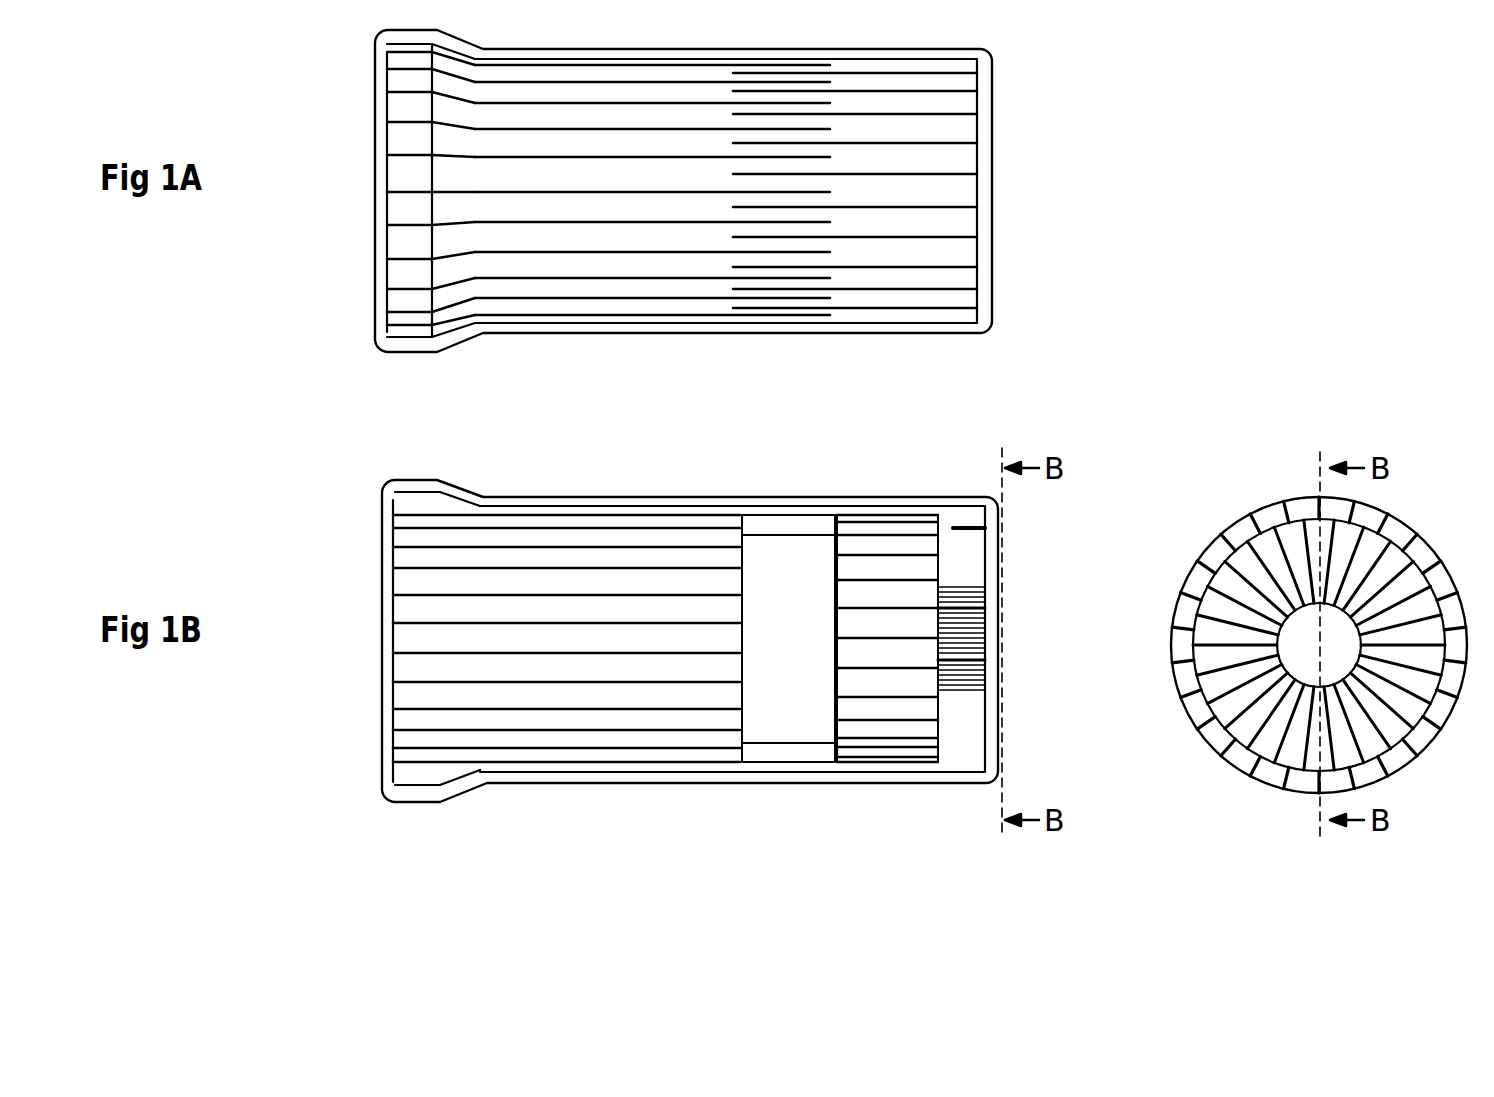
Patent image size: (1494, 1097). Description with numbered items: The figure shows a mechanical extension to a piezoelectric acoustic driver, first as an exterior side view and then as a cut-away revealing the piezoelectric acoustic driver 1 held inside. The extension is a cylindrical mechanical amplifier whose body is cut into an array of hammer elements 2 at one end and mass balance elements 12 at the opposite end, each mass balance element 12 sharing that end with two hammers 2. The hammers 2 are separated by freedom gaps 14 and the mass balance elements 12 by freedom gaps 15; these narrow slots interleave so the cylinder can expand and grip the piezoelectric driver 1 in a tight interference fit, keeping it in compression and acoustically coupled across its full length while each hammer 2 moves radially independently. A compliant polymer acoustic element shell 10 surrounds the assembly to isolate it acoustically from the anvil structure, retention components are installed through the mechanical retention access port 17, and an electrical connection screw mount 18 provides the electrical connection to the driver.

In FIG. 1B, the piezoelectric acoustic driver 1 is at (762, 708).
In FIG. 1A, the hammer elements 2 is at (405, 178).
In FIG. 1B, the hammer elements 2 is at (403, 640).
In FIG. 1A, the polymer acoustic element shell 10 is at (445, 356).
In FIG. 1B, the polymer acoustic element shell 10 is at (1150, 380).
In FIG. 1A, the mass balance elements 12 is at (928, 244).
In FIG. 1B, the mass balance elements 12 is at (877, 545).
In FIG. 1A, the freedom gap of the hammers 14 is at (383, 292).
In FIG. 1B, the freedom gap of the hammers 14 is at (392, 548).
In FIG. 1A, the freedom gap of the mass balance elements 15 is at (975, 176).
In FIG. 1B, the freedom gap of the mass balance elements 15 is at (983, 610).
In FIG. 1B, the mechanical retention access port 17 is at (1003, 642).
In FIG. 1B, the electrical connection screw mount 18 is at (985, 528).